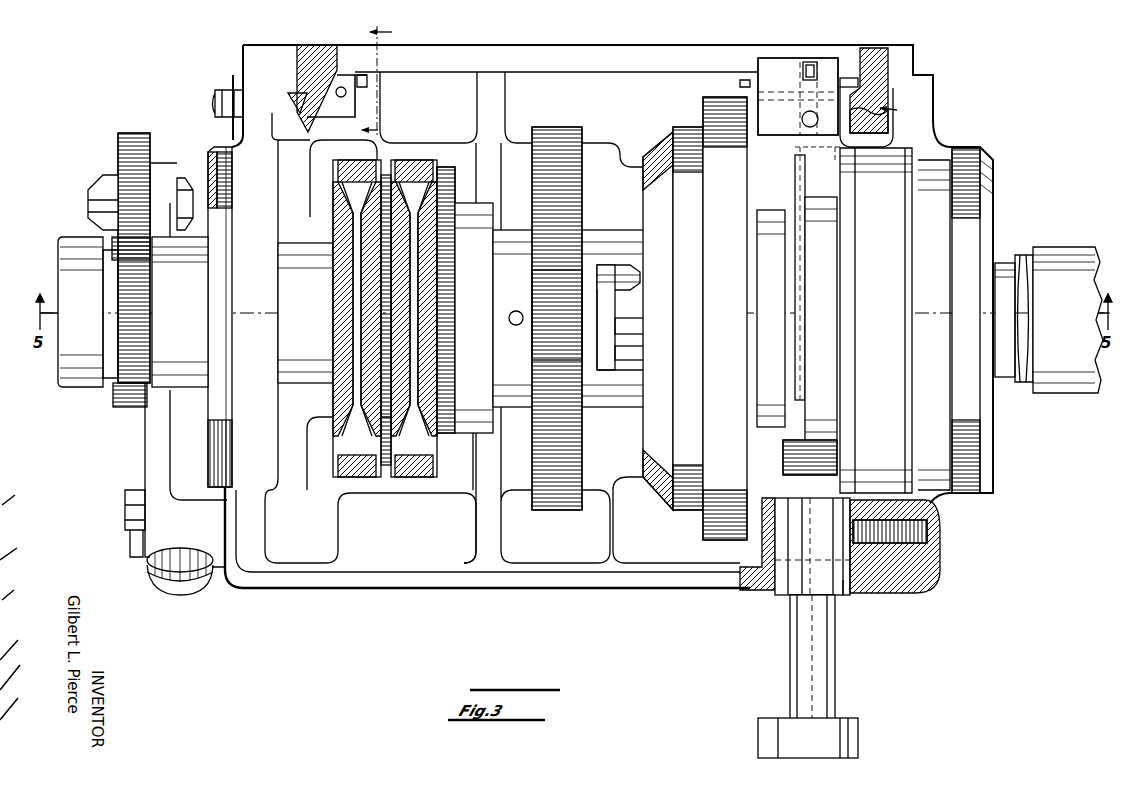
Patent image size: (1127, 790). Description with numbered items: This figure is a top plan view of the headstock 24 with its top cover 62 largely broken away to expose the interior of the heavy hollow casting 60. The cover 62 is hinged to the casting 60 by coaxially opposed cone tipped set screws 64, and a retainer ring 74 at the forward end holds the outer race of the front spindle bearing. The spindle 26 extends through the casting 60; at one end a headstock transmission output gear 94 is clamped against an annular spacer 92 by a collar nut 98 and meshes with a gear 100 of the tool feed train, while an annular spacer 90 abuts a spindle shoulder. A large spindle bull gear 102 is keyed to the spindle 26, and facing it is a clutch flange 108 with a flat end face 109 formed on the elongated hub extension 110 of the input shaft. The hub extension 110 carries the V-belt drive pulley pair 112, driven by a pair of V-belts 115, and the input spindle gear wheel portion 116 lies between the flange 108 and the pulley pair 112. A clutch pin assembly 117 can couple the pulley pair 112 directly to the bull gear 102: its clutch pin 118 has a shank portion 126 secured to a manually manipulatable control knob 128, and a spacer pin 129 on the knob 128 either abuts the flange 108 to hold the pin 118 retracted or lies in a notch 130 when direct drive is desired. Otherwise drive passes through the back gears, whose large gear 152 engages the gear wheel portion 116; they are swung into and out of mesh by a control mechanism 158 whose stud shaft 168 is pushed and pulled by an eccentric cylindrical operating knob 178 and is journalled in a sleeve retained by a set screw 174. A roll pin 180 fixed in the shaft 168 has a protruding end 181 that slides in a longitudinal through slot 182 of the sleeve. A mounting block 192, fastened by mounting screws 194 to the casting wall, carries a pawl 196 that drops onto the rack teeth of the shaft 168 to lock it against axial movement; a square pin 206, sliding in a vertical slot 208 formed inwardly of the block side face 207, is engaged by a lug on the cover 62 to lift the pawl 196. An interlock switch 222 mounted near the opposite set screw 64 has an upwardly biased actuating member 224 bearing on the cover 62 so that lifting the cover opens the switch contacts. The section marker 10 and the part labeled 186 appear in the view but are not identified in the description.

The section line 10 is at (373, 81).
The headstock 24 is at (772, 42).
The spindle 26 is at (1013, 263).
The headstock body casting 60 is at (580, 52).
The top cover 62 is at (305, 45).
The cone tipped set screw 64 is at (232, 90).
The retainer ring 74 is at (965, 149).
The annular spacer 90 is at (300, 383).
The annular spacer 92 is at (190, 387).
The headstock transmission output gear 94 is at (125, 383).
The collar nut 98 is at (78, 387).
The gear 100 is at (130, 407).
The spindle bull gear 102 is at (733, 100).
The clutch flange 108 is at (688, 128).
The flat end face 109 is at (648, 155).
The hub extension 110 is at (516, 231).
The V-belt drive pulley pair 112 is at (446, 168).
The V-belts 115 is at (393, 162).
The input spindle gear wheel portion 116 is at (582, 226).
The clutch pin assembly 117 is at (656, 273).
The clutch pin 118 is at (617, 384).
The shank portion 126 is at (650, 328).
The control knob 128 is at (645, 355).
The spacer pin 129 is at (609, 266).
The notch 130 is at (667, 318).
The large gear 152 is at (582, 192).
The control mechanism 158 is at (790, 606).
The stud shaft 168 is at (835, 635).
The set screw 174 is at (928, 535).
The cylindrical operating knob 178 is at (858, 725).
The roll pin 180 is at (812, 546).
The end 181 is at (862, 593).
The longitudinal through slot 182 is at (797, 510).
The washer 186 is at (760, 594).
The mounting block 192 is at (742, 80).
The mounting screws 194 is at (869, 120).
The pawl 196 is at (812, 178).
The square pin 206 is at (800, 80).
The side face 207 is at (850, 78).
The vertical slot 208 is at (812, 62).
The interlock switch 222 is at (346, 92).
The actuating member 224 is at (368, 80).